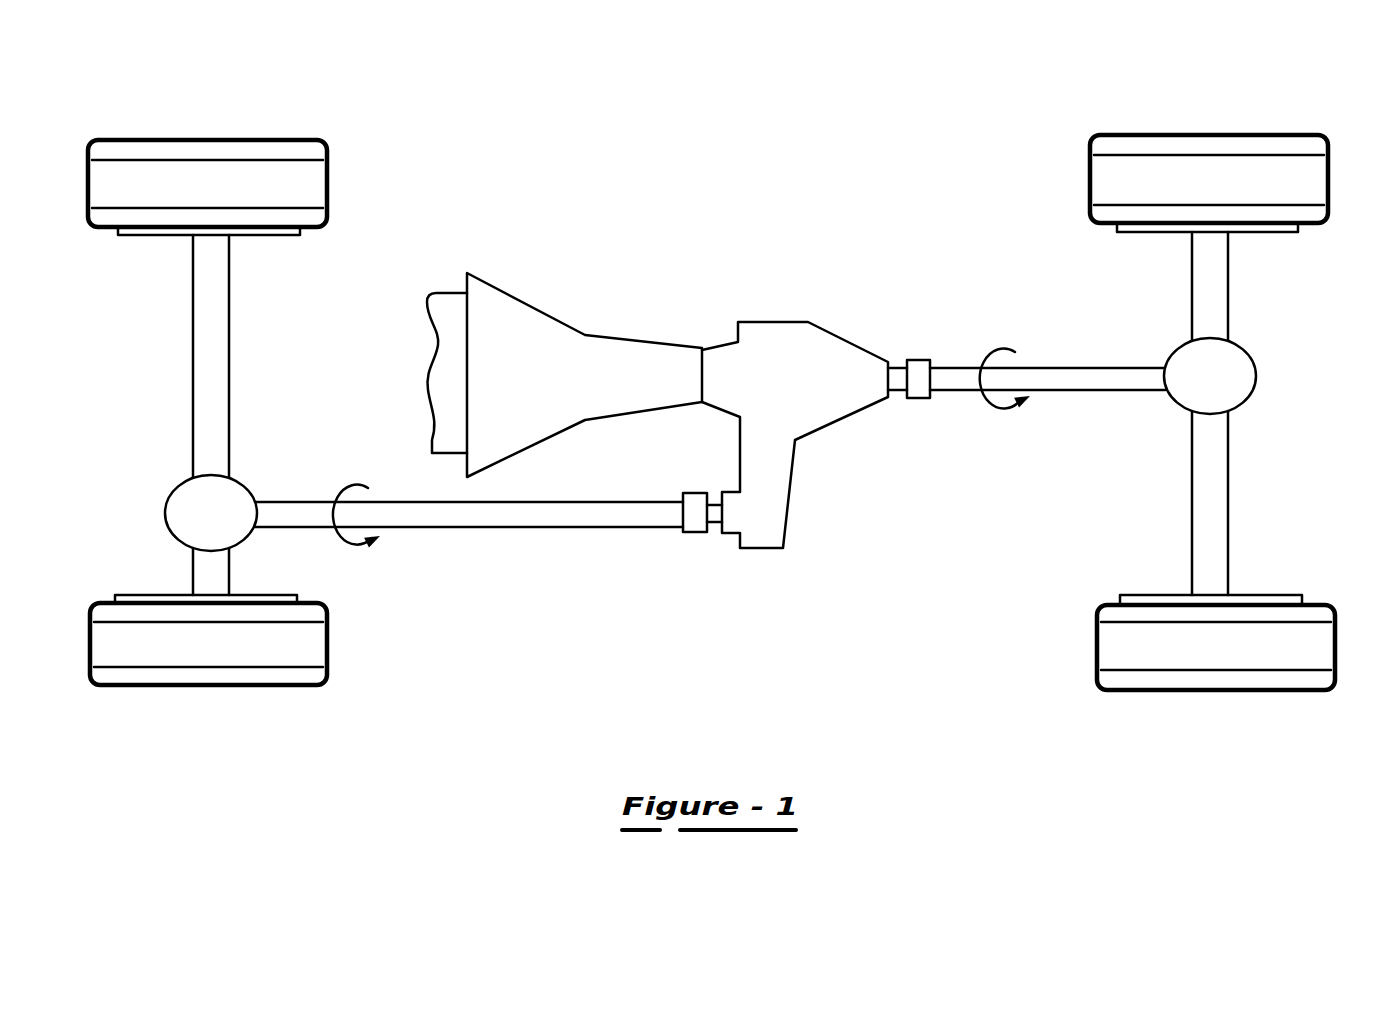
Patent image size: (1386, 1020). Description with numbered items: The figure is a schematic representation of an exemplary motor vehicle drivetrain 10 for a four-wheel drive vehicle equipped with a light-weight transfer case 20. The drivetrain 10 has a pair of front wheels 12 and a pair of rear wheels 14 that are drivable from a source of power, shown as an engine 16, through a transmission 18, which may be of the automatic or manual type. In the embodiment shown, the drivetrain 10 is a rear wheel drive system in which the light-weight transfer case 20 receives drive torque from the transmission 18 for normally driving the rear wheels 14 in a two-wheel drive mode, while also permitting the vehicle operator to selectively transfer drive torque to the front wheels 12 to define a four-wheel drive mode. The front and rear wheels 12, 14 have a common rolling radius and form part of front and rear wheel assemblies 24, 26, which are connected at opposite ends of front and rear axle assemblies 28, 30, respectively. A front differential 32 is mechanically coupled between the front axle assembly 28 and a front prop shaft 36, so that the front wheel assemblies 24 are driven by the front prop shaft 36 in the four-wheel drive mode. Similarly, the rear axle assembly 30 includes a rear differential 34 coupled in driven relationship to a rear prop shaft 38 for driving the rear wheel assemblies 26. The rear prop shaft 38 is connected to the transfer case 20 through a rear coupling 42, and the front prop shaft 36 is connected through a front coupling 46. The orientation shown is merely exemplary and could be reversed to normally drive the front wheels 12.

The drivetrain 10 is at (960, 491).
The front wheels 12 is at (175, 188).
The rear wheels 14 is at (1180, 173).
The engine 16 is at (440, 320).
The transmission 18 is at (568, 398).
The light-weight transfer case 20 is at (840, 412).
The front wheel assemblies 24 is at (260, 250).
The rear wheel assemblies 26 is at (1245, 238).
The front axle assembly 28 is at (182, 338).
The rear axle assembly 30 is at (1240, 292).
The front differential 32 is at (210, 515).
The rear differential 34 is at (1220, 383).
The front prop shaft 36 is at (537, 512).
The rear prop shaft 38 is at (1085, 380).
The rear coupling 42 is at (918, 365).
The front coupling 46 is at (693, 517).